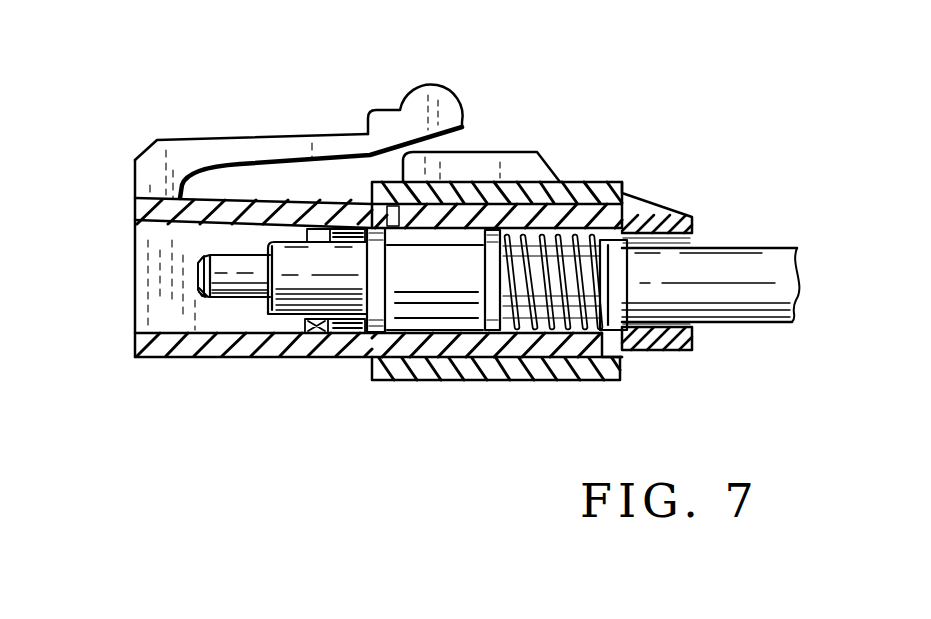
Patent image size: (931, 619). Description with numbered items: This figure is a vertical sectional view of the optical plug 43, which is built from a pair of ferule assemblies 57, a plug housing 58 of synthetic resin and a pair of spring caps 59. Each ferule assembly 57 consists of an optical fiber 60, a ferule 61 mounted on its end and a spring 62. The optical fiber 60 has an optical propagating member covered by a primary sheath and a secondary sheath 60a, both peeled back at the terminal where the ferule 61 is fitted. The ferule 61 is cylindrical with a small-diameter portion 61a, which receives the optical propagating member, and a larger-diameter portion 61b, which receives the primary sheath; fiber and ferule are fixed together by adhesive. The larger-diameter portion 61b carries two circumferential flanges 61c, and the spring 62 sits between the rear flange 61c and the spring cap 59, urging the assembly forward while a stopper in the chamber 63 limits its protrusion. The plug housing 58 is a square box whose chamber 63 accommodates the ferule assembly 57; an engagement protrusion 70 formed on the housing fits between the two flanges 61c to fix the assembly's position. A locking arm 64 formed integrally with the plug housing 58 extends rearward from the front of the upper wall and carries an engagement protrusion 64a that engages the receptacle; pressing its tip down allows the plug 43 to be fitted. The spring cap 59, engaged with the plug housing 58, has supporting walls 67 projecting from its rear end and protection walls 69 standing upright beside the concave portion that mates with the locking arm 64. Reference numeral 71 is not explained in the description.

The optical plug 43 is at (549, 111).
The ferule assembly 57 is at (440, 380).
The plug housing 58 is at (158, 357).
The spring cap 59 is at (627, 383).
The optical fiber 60 is at (743, 248).
The secondary sheath 60a is at (733, 298).
The ferule 61 is at (250, 357).
The small-diameter portion 61a is at (214, 274).
The larger-diameter portion 61b is at (285, 360).
The flanges 61c is at (380, 380).
The spring 62 is at (547, 380).
The chamber 63 is at (153, 308).
The locking arm 64 is at (196, 140).
The engagement protrusion 64a is at (277, 117).
The supporting walls 67 is at (658, 218).
The protection walls 69 is at (537, 170).
The engagement protrusion 70 is at (420, 222).
The retaining ring 71 is at (318, 357).